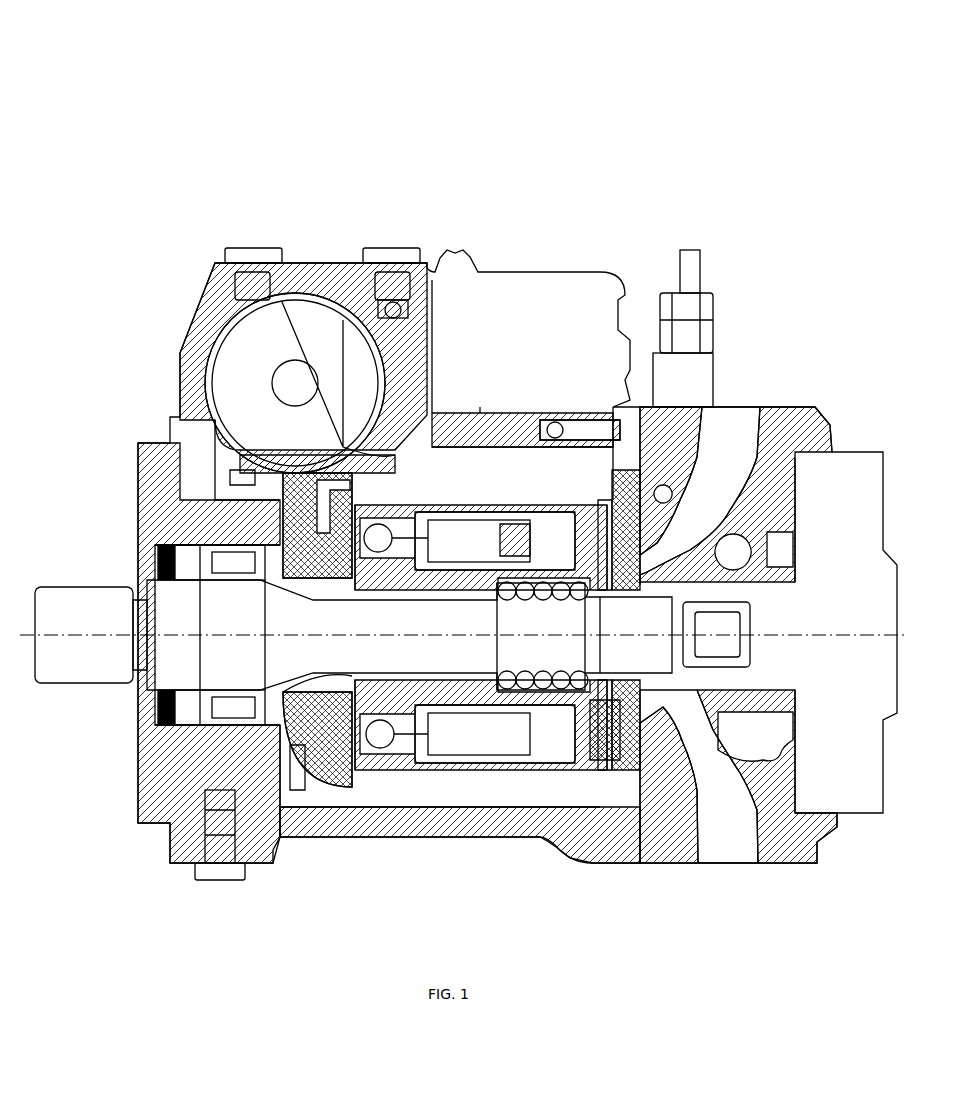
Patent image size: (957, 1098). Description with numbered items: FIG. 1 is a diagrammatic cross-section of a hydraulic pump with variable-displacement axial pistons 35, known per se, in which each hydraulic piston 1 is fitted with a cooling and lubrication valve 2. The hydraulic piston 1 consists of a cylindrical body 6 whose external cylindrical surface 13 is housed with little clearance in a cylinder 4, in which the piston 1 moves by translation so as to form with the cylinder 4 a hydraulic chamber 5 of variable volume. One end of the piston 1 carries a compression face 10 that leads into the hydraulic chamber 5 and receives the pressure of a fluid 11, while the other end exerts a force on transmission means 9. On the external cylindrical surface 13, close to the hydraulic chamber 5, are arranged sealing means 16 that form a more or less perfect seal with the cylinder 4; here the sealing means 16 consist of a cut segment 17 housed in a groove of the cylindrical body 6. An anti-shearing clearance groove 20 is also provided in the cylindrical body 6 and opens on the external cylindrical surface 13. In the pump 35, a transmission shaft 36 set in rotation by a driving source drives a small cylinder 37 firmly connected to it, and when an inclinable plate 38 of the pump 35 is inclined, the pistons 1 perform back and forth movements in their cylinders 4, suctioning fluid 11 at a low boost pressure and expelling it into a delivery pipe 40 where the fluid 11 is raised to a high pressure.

The hydraulic piston 1 is at (532, 500).
The cooling and lubrication valve 2 is at (568, 520).
The cylinder 4 is at (598, 510).
The hydraulic chamber 5 is at (620, 560).
The cylindrical body 6 is at (448, 500).
The transmission means 9 is at (395, 505).
The compression face 10 is at (654, 440).
The fluid 11 is at (758, 460).
The external cylindrical surface 13 is at (440, 745).
The sealing means 16 is at (497, 740).
The cut segment 17 is at (528, 754).
The anti-shearing clearance groove 20 is at (465, 738).
The hydraulic pump with variable-displacement axial pistons 35 is at (740, 190).
The transmission shaft 36 is at (78, 603).
The small cylinder 37 is at (605, 748).
The inclinable plate 38 is at (335, 770).
The delivery pipe 40 is at (712, 850).